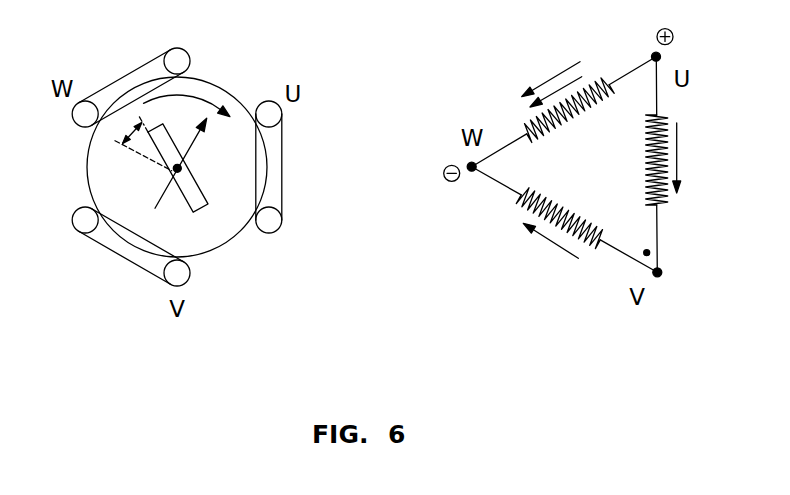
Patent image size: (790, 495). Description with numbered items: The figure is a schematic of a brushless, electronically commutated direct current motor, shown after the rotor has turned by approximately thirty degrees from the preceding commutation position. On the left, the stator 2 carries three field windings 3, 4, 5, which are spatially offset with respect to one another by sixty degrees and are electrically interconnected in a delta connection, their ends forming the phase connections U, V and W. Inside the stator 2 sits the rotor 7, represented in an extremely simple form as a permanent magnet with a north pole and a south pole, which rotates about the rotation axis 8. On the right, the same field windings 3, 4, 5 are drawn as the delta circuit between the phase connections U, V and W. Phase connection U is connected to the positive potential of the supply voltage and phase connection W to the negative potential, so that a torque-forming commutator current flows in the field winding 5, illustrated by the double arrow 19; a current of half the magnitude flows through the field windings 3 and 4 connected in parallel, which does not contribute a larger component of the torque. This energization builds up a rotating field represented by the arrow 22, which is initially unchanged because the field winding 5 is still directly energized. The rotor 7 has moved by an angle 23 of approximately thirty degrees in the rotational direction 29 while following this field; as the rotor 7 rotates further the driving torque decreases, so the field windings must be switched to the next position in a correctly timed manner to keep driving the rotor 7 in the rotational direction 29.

The stator 2 is at (652, 255).
The field winding 3 is at (662, 193).
The field winding 4 is at (588, 247).
The field winding 5 is at (600, 80).
The rotor 7 is at (190, 197).
The rotation axis 8 is at (182, 168).
The double arrow 19 is at (558, 78).
The arrow 22 is at (196, 148).
The angle 23 is at (142, 148).
The rotational direction 29 is at (190, 95).